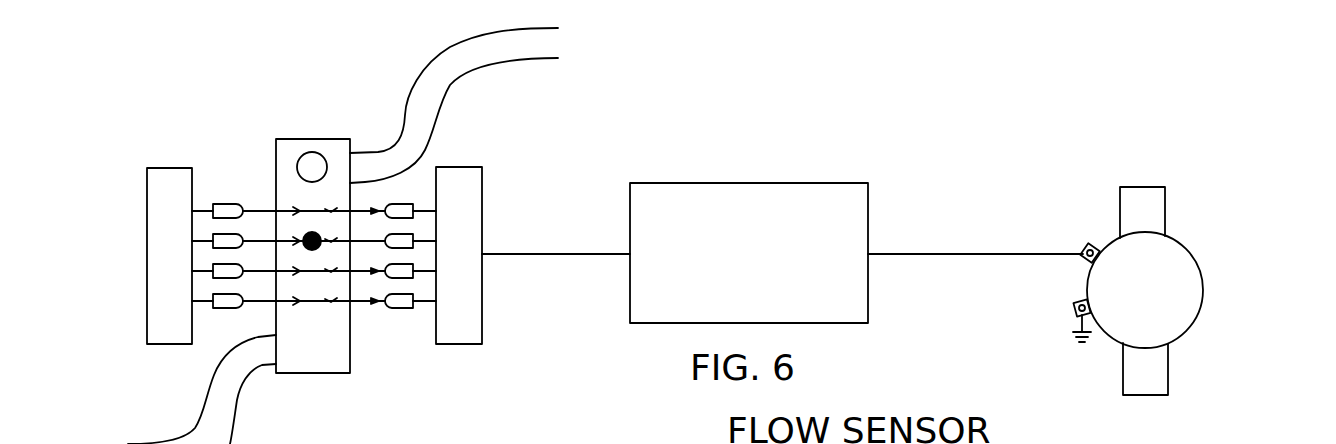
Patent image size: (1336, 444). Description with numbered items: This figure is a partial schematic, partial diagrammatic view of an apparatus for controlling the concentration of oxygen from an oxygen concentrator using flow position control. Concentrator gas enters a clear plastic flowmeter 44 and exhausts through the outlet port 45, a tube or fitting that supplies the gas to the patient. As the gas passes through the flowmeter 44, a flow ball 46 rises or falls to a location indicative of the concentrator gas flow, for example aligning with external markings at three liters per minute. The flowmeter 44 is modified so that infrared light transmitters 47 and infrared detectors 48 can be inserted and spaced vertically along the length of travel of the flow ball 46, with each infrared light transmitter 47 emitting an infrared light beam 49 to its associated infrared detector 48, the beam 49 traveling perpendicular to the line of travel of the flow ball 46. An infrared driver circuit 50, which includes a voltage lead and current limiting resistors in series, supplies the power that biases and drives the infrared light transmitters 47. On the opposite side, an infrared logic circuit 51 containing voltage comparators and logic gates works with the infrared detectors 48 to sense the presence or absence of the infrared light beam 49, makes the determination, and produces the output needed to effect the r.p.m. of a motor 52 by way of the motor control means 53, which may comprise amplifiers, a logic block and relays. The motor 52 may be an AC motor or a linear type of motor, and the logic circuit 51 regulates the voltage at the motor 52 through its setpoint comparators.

The flowmeter 44 is at (327, 375).
The outlet port 45 is at (392, 144).
The flow ball 46 is at (307, 232).
The infrared light transmitter 47 is at (213, 210).
The infrared detector 48 is at (408, 308).
The infrared light beam 49 is at (244, 242).
The infrared driver circuit 50 is at (147, 227).
The infrared logic circuit 51 is at (482, 317).
The motor 52 is at (1188, 252).
The motor control means 53 is at (870, 208).